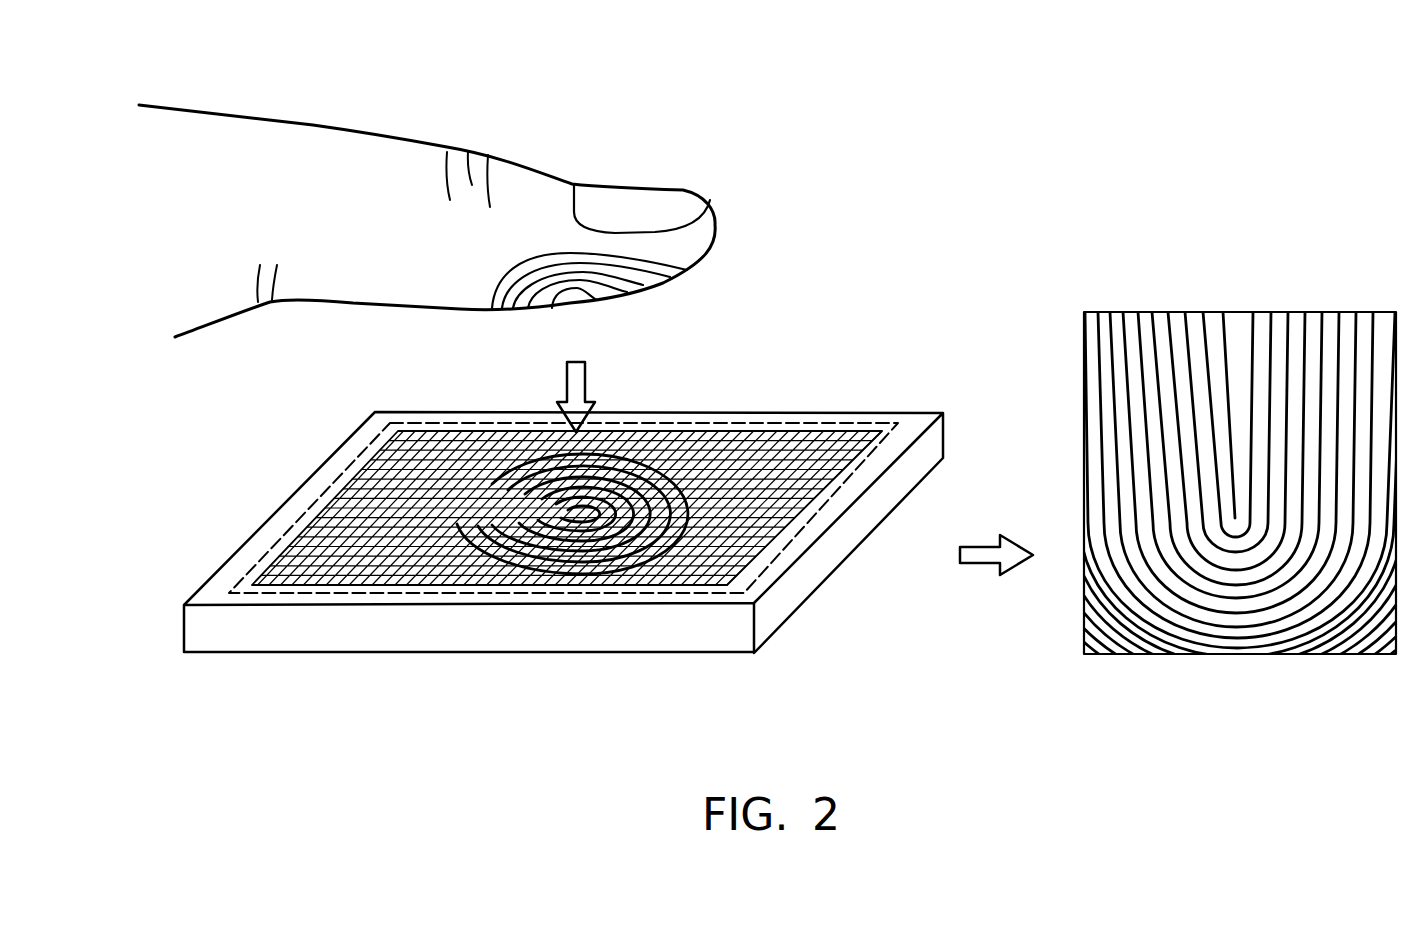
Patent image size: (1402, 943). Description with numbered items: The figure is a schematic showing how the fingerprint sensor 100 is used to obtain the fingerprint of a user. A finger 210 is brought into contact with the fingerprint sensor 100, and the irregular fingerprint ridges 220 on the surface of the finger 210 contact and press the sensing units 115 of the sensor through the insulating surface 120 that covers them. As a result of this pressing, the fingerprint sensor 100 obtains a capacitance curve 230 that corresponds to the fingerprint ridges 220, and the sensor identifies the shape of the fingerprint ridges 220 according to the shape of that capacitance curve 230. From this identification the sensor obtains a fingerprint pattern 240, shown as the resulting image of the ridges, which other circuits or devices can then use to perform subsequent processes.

The fingerprint sensor 100 is at (911, 409).
The sensing units 115 is at (250, 585).
The insulating surface 120 is at (777, 420).
The finger 210 is at (720, 187).
The fingerprint ridges 220 is at (618, 288).
The capacitance curve 230 is at (557, 515).
The fingerprint pattern 240 is at (1239, 299).